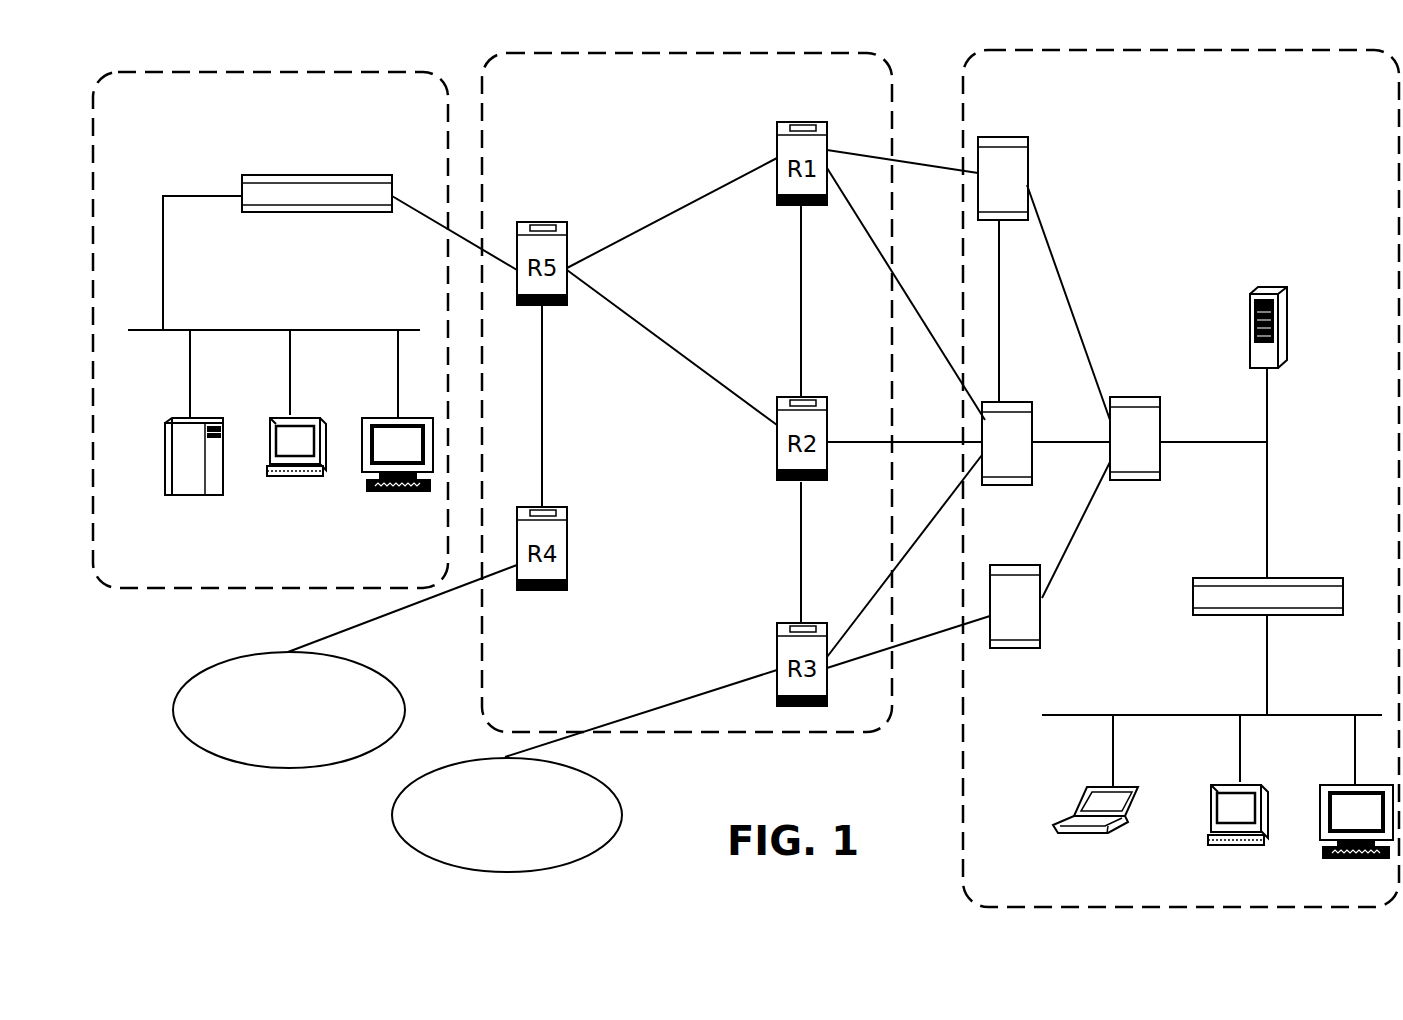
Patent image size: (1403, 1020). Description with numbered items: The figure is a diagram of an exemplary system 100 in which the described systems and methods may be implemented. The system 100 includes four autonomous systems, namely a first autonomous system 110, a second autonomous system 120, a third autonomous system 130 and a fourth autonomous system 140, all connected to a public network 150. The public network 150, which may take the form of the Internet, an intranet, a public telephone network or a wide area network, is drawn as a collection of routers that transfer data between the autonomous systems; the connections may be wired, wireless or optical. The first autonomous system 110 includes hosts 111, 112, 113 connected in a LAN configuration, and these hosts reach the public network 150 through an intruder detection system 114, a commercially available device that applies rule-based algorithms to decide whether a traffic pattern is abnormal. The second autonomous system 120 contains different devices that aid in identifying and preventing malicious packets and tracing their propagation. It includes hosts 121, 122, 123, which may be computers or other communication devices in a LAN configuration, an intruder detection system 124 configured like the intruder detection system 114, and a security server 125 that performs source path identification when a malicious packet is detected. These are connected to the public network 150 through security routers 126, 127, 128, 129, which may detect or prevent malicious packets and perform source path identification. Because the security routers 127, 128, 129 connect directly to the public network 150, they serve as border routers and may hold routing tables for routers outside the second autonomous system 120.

The system 100 is at (218, 866).
The autonomous system 110 is at (270, 330).
The host 111 is at (383, 418).
The host 112 is at (275, 420).
The host 113 is at (172, 427).
The intruder detection system 114 is at (317, 212).
The autonomous system 120 is at (1181, 478).
The host 121 is at (1087, 790).
The host 122 is at (1213, 790).
The host 123 is at (1327, 785).
The intruder detection system 124 is at (1217, 580).
The security server 125 is at (1275, 287).
The security router 126 is at (1132, 395).
The security router 127 is at (1003, 135).
The security router 128 is at (1023, 400).
The security router 129 is at (1013, 563).
The autonomous system 130 is at (289, 710).
The autonomous system 140 is at (507, 815).
The public network 150 is at (687, 392).